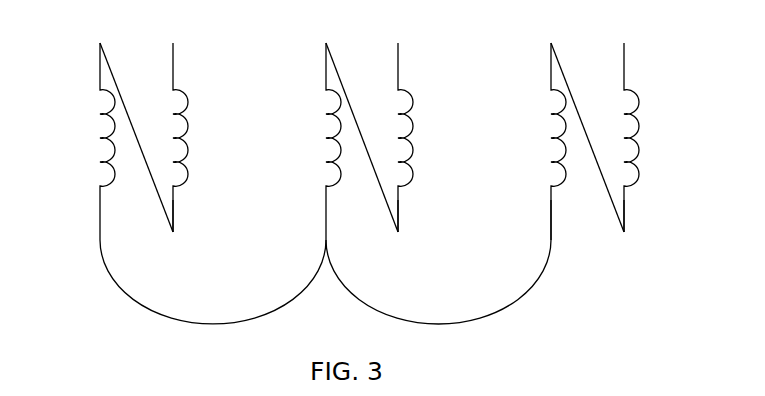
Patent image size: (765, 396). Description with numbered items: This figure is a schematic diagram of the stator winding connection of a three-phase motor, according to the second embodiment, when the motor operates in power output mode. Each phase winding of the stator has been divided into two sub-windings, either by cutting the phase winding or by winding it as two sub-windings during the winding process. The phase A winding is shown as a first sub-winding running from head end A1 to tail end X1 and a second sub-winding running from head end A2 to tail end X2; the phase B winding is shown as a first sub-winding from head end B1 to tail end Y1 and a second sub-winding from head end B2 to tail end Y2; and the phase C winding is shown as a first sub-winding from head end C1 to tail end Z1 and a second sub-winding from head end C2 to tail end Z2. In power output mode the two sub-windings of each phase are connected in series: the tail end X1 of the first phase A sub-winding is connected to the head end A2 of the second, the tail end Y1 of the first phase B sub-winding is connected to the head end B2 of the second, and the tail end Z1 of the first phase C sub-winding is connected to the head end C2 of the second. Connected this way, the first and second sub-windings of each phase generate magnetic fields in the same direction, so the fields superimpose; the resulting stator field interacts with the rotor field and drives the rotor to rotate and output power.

The head end of second sub-winding A2X2 A2 is at (126, 125).
The head end of first sub-winding A1X1 A1 is at (187, 121).
The tail end of second sub-winding A2X2 X2 is at (184, 282).
The tail end of first sub-winding A1X1 X1 is at (177, 235).
The head end of second sub-winding B2Y2 B2 is at (358, 125).
The head end of first sub-winding B1Y1 B1 is at (414, 121).
The tail end of second sub-winding B2Y2 Y2 is at (413, 282).
The tail end of first sub-winding B1Y1 Y1 is at (407, 235).
The head end of second sub-winding C2Z2 C2 is at (576, 125).
The head end of first sub-winding C1Z1 C1 is at (638, 121).
The tail end of second sub-winding C2Z2 Z2 is at (526, 235).
The tail end of first sub-winding C1Z1 Z1 is at (622, 235).